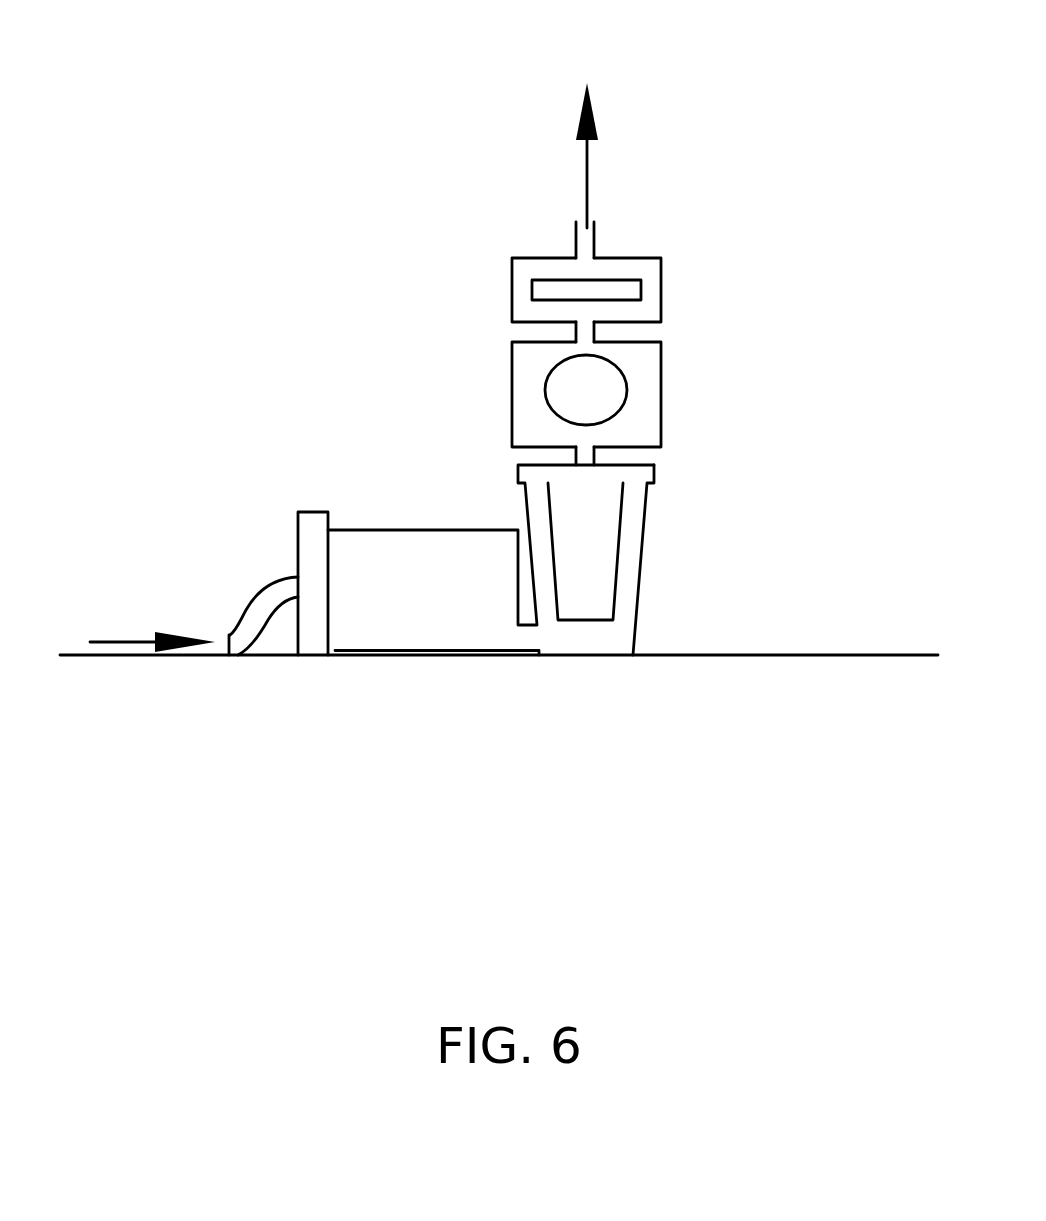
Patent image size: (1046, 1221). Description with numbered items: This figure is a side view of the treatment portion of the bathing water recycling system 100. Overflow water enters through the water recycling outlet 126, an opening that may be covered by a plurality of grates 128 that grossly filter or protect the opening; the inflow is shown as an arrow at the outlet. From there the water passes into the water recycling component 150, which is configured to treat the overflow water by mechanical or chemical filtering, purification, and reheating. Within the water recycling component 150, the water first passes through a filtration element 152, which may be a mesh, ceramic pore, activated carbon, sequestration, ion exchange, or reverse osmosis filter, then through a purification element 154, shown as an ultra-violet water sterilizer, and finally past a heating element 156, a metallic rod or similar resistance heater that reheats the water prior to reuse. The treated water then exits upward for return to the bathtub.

The bathing water recycling system 100 is at (752, 142).
The water recycling outlet 126 is at (222, 667).
The grates 128 is at (229, 635).
The water recycling component 150 is at (715, 503).
The filtration element 152 is at (423, 626).
The purification element 154 is at (627, 390).
The heating element 156 is at (652, 288).